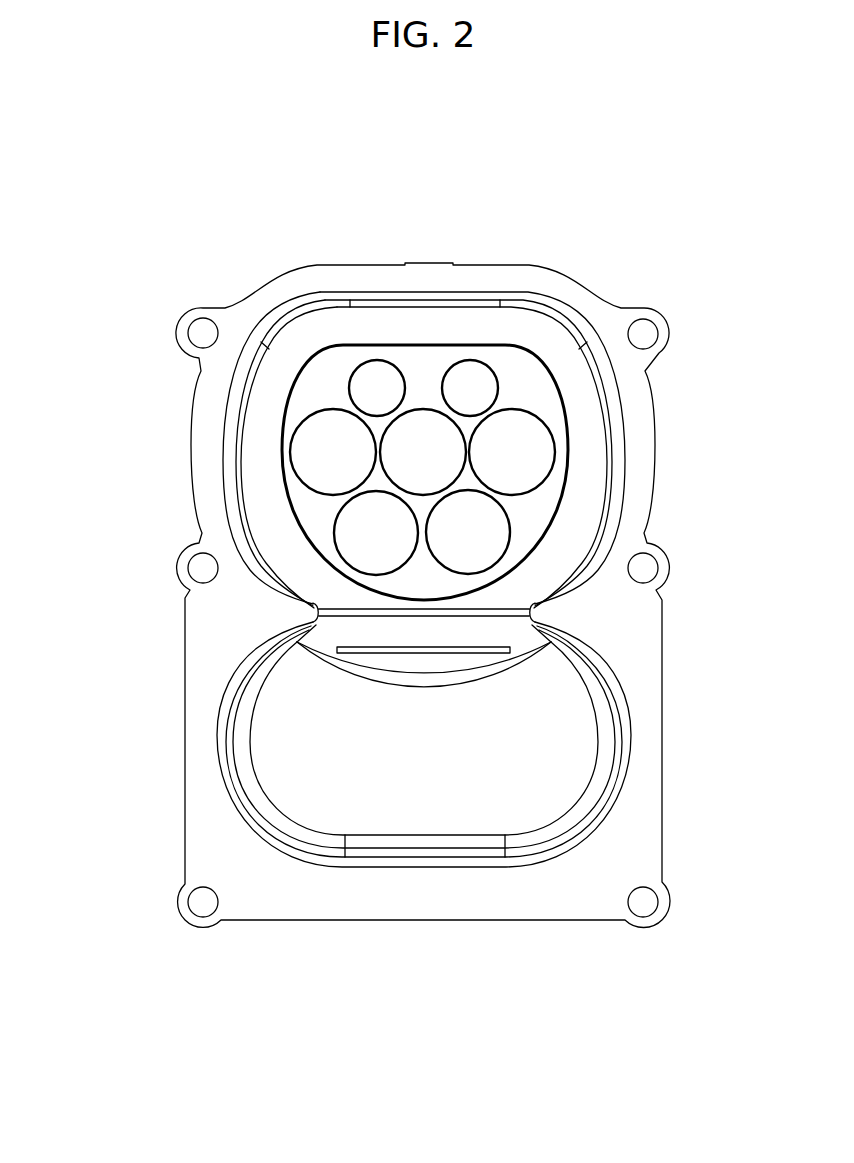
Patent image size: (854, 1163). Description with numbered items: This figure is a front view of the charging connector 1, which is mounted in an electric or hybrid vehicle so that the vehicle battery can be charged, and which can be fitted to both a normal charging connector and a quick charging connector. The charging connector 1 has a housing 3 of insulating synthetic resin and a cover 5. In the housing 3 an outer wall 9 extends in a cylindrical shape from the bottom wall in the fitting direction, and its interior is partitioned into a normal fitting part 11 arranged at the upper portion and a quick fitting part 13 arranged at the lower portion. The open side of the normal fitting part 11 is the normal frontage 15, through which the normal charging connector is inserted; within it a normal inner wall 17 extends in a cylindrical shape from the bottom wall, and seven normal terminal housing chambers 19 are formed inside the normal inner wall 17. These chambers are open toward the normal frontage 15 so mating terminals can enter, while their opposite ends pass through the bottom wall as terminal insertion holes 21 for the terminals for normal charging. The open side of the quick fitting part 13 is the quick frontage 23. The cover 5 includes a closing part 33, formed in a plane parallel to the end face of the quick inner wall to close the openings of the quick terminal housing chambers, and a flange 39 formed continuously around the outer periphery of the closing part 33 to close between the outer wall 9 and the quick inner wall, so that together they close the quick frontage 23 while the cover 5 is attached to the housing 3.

The charging connector 1 is at (425, 209).
The housing 3 is at (535, 264).
The cover 5 is at (432, 828).
The outer wall 9 is at (288, 318).
The normal fitting part 11 is at (573, 333).
The quick fitting part 13 is at (618, 788).
The normal frontage 15 is at (257, 438).
The normal inner wall 17 is at (331, 373).
The normal terminal housing chambers 19 is at (528, 444).
The terminal insertion holes 21 is at (480, 533).
The quick frontage 23 is at (235, 738).
The closing part 33 is at (487, 782).
The flange 39 is at (585, 808).